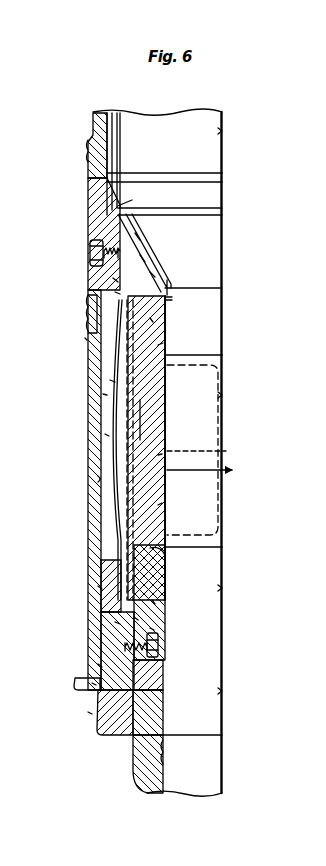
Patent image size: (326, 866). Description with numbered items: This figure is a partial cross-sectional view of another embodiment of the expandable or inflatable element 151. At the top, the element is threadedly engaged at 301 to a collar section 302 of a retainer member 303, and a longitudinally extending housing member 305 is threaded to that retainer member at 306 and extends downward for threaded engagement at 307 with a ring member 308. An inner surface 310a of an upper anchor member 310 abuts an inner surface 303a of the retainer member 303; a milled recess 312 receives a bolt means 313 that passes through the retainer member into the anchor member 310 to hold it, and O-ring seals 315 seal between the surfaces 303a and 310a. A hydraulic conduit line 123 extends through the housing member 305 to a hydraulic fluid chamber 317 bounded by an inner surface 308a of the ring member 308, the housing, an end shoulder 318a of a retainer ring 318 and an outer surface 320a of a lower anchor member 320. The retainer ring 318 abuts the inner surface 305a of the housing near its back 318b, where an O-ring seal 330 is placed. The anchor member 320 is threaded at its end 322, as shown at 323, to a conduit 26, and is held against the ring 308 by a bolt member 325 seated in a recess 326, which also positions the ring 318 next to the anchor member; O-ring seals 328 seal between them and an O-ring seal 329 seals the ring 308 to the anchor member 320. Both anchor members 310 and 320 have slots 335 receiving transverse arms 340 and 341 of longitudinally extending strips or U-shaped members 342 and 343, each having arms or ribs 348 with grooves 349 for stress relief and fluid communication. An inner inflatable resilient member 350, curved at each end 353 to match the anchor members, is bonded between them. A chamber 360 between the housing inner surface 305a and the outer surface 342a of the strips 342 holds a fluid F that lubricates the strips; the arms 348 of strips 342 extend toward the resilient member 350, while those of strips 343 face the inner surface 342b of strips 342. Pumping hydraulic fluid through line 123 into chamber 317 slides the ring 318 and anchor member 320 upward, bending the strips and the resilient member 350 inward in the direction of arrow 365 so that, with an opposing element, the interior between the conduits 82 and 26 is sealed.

The conduit 82 is at (92, 120).
The threaded engagement 301 is at (88, 146).
The collar section 302 is at (88, 160).
The retainer member 303 is at (98, 198).
The inner surface 303a is at (136, 202).
The anchor member 310 is at (133, 246).
The O-ring seals 315 is at (137, 236).
The slots or grooves 335 is at (150, 273).
The transverse arms 340 is at (168, 301).
The milled or grooved recess 312 is at (90, 246).
The bolt means 313 is at (92, 259).
The inner surface 310a is at (115, 280).
The transverse arms 341 is at (118, 293).
The threaded engagement 306 is at (90, 314).
The inflatable element 151 is at (85, 340).
The housing member 305 is at (92, 420).
The inner surface 305a is at (100, 478).
The longitudinally extending strips 342 is at (125, 452).
The back or outer surface 342a is at (113, 382).
The fluid F is at (106, 395).
The annulus or chamber 360 is at (108, 436).
The longitudinally extending strips 343 is at (160, 393).
The curved end 353 is at (163, 343).
The inner inflatable resilient member 350 is at (158, 422).
The outwardly extending arms or ribs 348 is at (160, 455).
The inner surface or face 342b is at (217, 450).
The arrow 365 is at (217, 470).
The machined or milled grooves 349 is at (160, 505).
The anchor member 320 is at (160, 580).
The back 318b is at (100, 588).
The O-ring seal 330 is at (103, 612).
The retainer member 318 is at (122, 633).
The bolt member 325 is at (120, 647).
The machined or grooved recess 326 is at (160, 641).
The O-ring seals 328 is at (152, 630).
The outer surface 320a is at (100, 666).
The end shoulder 318a is at (78, 679).
The hydraulic conduit line 123 is at (95, 683).
The threaded engagement 307 is at (90, 714).
The ring member 308 is at (97, 729).
The hydraulic fluid chamber 317 is at (150, 671).
The inner surface 308a is at (136, 689).
The O-ring seal 329 is at (142, 712).
The end 322 is at (142, 762).
The threaded engagement 323 is at (166, 753).
The conduit 26 is at (147, 788).